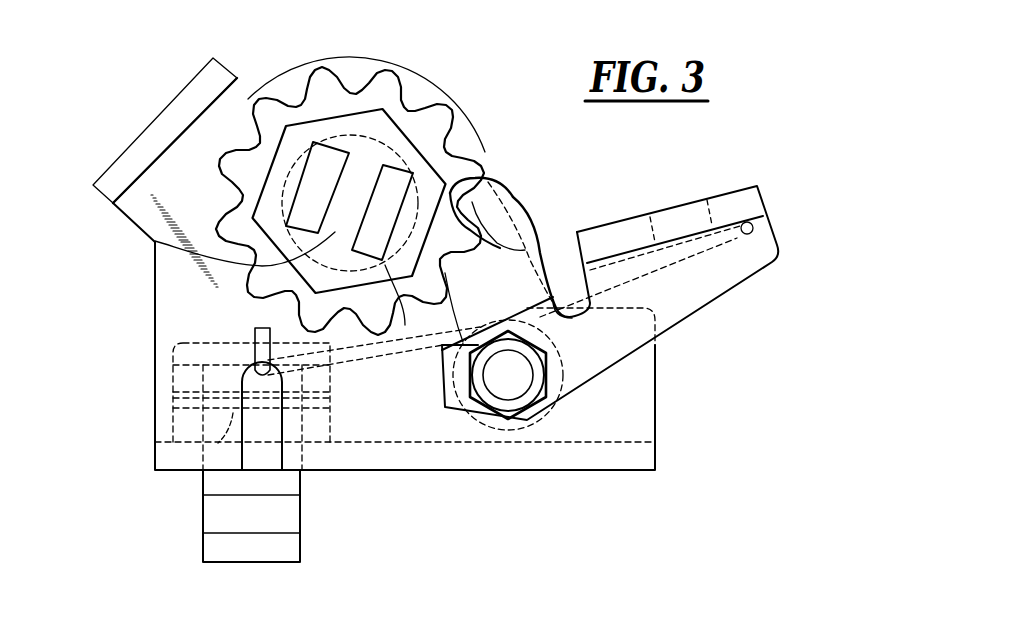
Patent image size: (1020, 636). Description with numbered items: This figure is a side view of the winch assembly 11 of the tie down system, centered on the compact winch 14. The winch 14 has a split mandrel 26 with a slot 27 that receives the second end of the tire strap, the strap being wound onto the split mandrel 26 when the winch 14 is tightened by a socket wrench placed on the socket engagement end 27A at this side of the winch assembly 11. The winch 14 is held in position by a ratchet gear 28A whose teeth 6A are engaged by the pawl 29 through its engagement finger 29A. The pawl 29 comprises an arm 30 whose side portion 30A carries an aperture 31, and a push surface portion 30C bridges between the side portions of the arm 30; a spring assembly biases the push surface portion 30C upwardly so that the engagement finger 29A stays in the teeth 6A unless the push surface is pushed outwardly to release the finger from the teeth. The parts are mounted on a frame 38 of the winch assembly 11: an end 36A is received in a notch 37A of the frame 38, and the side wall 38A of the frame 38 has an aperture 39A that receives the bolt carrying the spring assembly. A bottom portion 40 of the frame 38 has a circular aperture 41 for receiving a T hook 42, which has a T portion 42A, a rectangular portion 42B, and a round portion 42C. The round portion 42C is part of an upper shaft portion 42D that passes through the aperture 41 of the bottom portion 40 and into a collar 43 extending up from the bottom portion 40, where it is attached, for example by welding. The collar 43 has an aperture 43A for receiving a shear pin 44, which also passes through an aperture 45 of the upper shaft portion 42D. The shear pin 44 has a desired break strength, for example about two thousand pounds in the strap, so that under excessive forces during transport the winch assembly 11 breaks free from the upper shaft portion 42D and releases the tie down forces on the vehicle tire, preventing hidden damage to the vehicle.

The teeth 6A is at (383, 80).
The winch assembly 11 is at (670, 367).
The winch 14 is at (408, 121).
The split mandrel 26 is at (400, 192).
The slot 27 is at (155, 242).
The socket engagement end 27A is at (405, 325).
The ratchet gear 28A is at (309, 74).
The pawl 29 is at (523, 219).
The engagement finger 29A is at (525, 252).
The arm 30 is at (670, 297).
The side portion 30A is at (740, 258).
The push surface portion 30C is at (738, 200).
The aperture 31 is at (553, 357).
The end 36A is at (250, 350).
The notch 37A is at (247, 450).
The frame 38 is at (170, 167).
The side wall 38A is at (413, 430).
The aperture 39A is at (530, 413).
The bottom portion 40 is at (480, 470).
The circular aperture 41 is at (303, 450).
The T hook 42 is at (195, 552).
The T portion 42A is at (237, 550).
The rectangular portion 42B is at (275, 510).
The round portion 42C is at (203, 487).
The upper shaft portion 42D is at (217, 425).
The collar 43 is at (173, 400).
The aperture 43A is at (333, 440).
The shear pin 44 is at (175, 390).
The aperture 45 is at (217, 447).